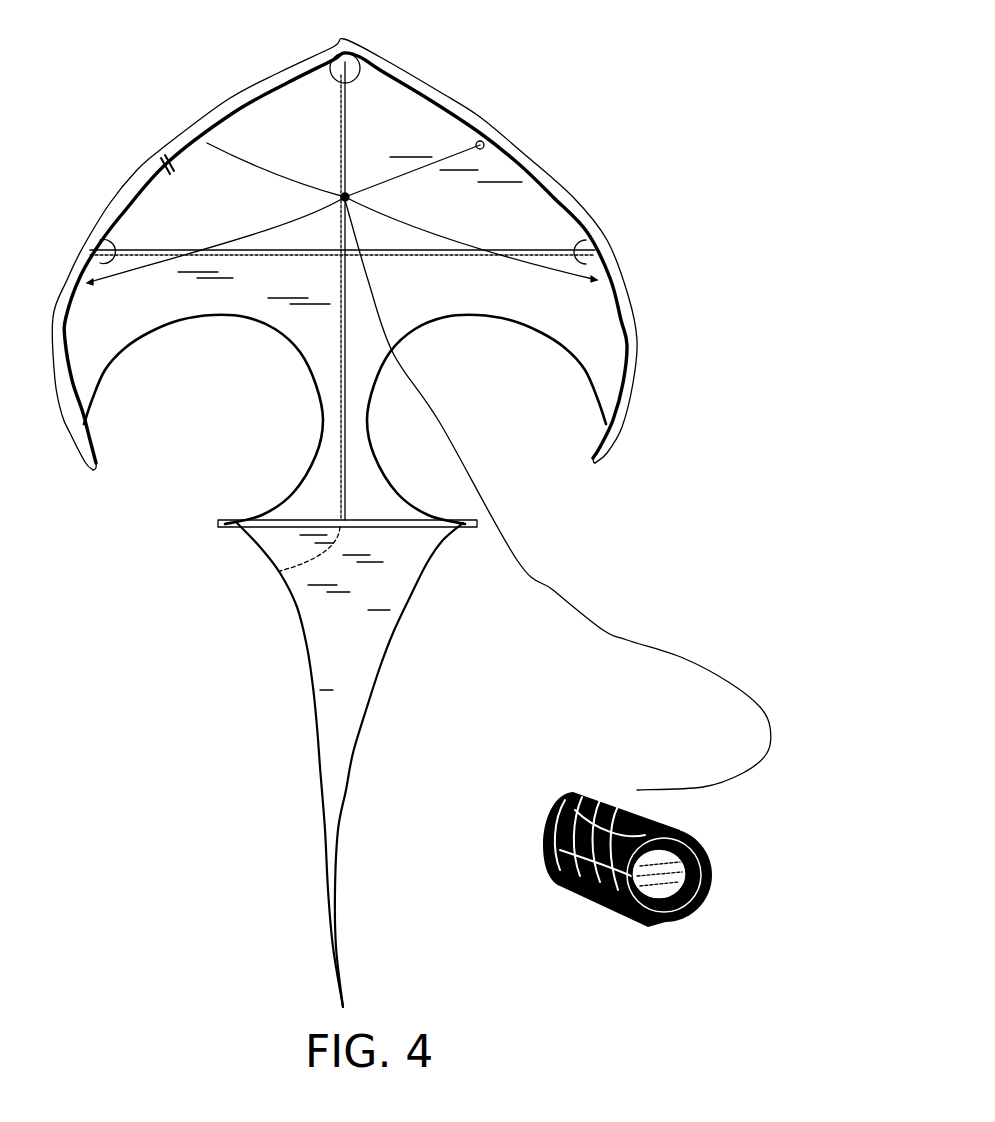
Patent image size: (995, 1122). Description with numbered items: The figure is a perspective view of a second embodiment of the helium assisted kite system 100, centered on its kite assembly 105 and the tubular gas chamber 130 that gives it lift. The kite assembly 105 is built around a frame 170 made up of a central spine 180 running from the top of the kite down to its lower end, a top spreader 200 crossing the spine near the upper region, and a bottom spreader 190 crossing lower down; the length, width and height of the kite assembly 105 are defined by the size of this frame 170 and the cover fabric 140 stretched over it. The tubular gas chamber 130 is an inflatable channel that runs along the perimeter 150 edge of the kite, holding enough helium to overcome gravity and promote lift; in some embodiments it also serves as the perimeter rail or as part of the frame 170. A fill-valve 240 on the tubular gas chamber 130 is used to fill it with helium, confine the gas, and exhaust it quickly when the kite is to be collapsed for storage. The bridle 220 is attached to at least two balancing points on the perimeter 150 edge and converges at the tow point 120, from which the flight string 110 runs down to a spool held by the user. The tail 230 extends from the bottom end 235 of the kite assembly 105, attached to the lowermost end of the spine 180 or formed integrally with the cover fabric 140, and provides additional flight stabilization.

The helium assisted kite system 100 is at (483, 43).
The kite assembly 105 is at (530, 77).
The flight string 110 is at (627, 640).
The tow point 120 is at (340, 193).
The tubular gas chamber 130 is at (628, 295).
The cover fabric 140 is at (162, 210).
The perimeter 150 is at (400, 72).
The frame 170 is at (342, 361).
The spine 180 is at (342, 117).
The bottom spreader 190 is at (413, 527).
The top spreader 200 is at (530, 243).
The bridle 220 is at (412, 180).
The tail 230 is at (315, 692).
The bottom end 235 is at (280, 571).
The fill-valve 240 is at (162, 158).